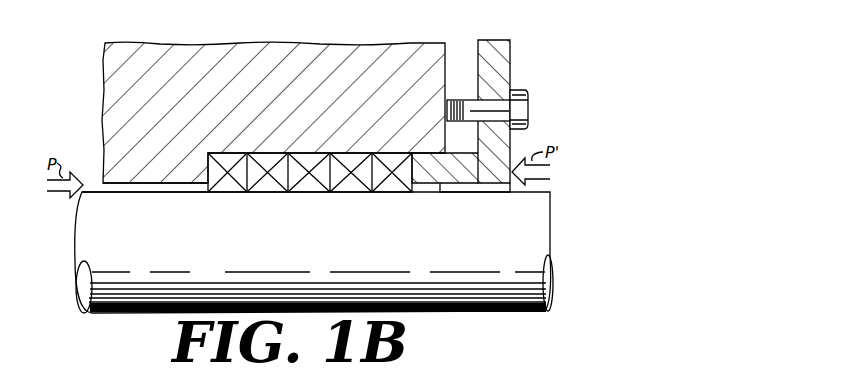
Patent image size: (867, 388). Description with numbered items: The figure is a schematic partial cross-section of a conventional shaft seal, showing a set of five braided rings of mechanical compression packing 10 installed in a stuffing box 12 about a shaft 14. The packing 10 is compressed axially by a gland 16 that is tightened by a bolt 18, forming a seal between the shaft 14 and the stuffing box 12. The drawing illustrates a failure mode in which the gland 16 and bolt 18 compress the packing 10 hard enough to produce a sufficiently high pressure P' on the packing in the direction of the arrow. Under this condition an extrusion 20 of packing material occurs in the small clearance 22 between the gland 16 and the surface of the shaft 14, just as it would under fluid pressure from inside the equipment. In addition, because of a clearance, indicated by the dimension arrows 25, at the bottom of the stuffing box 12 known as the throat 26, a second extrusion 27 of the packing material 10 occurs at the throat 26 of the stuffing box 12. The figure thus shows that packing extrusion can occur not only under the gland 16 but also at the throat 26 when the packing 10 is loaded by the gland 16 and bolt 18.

The rings of packing material 10 is at (272, 193).
The stuffing box 12 is at (312, 48).
The shaft 14 is at (298, 250).
The gland 16 is at (503, 63).
The bolt 18 is at (530, 108).
The extrusion 20 is at (433, 193).
The clearance 22 is at (482, 188).
The clearance at the throat 25 is at (195, 176).
The throat 26 is at (130, 192).
The extrusion at the throat 27 is at (182, 192).